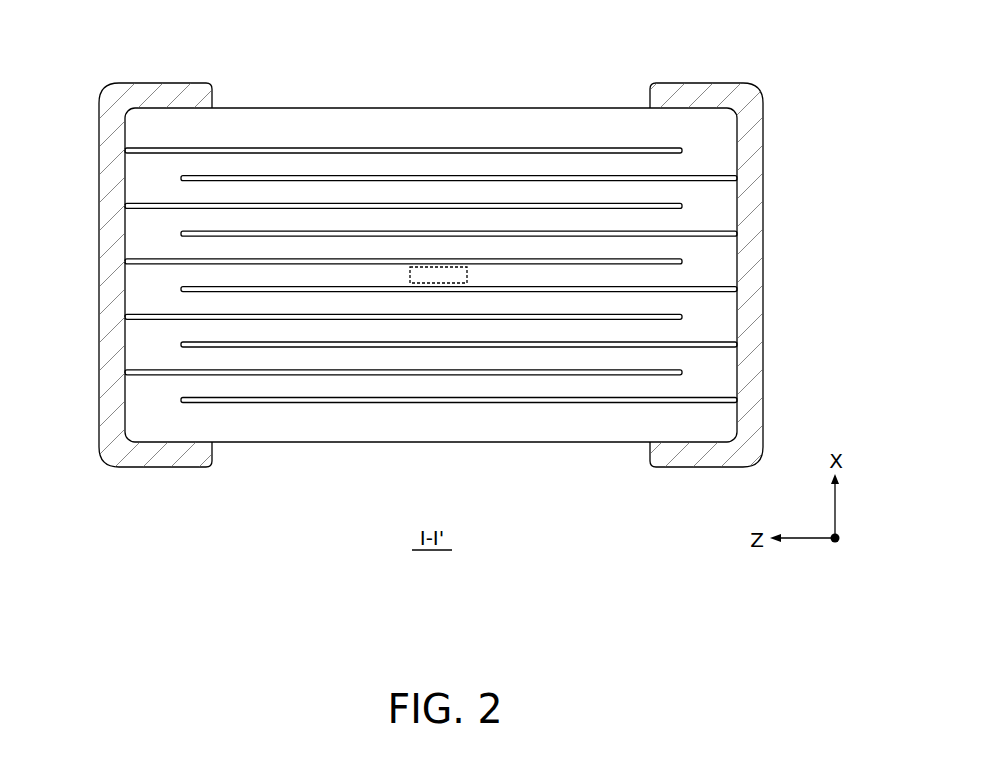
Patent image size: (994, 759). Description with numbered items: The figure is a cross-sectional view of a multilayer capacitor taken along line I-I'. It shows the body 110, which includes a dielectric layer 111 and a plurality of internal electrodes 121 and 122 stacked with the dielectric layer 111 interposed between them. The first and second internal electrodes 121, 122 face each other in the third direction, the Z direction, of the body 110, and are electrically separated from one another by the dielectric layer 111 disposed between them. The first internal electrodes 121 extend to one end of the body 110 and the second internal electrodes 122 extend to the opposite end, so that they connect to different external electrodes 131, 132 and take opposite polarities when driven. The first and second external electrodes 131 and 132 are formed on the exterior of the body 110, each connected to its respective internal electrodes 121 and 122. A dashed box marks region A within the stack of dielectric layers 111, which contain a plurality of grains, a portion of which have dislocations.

The body 110 is at (299, 107).
The dielectric layer 111 is at (207, 191).
The first internal electrode 121 is at (440, 148).
The second internal electrode 122 is at (516, 176).
The first external electrode 131 is at (155, 95).
The second external electrode 132 is at (697, 95).
The region A is at (440, 283).